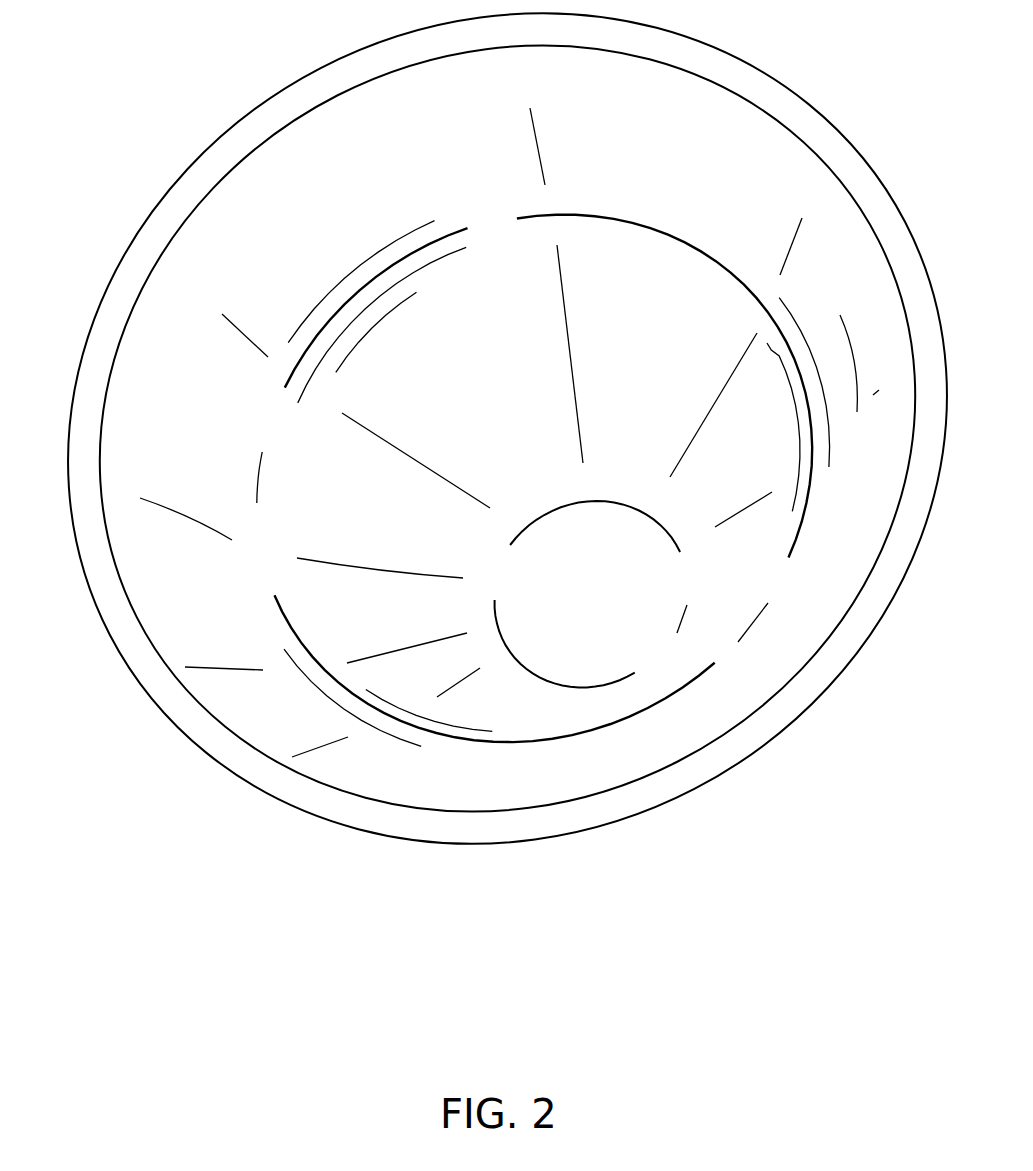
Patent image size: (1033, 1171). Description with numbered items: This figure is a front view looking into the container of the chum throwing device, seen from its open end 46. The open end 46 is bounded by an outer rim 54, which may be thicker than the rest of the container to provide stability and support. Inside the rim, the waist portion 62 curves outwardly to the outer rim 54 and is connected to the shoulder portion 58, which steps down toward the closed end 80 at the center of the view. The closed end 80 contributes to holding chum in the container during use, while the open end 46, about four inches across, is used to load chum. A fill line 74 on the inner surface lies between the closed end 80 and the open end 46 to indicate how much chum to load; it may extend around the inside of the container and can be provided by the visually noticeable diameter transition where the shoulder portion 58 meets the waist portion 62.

The open end 46 is at (98, 662).
The outer rim 54 is at (248, 125).
The waist portion 62 is at (378, 147).
The fill line 74 is at (600, 217).
The shoulder portion 58 is at (622, 357).
The closed end 80 is at (615, 547).